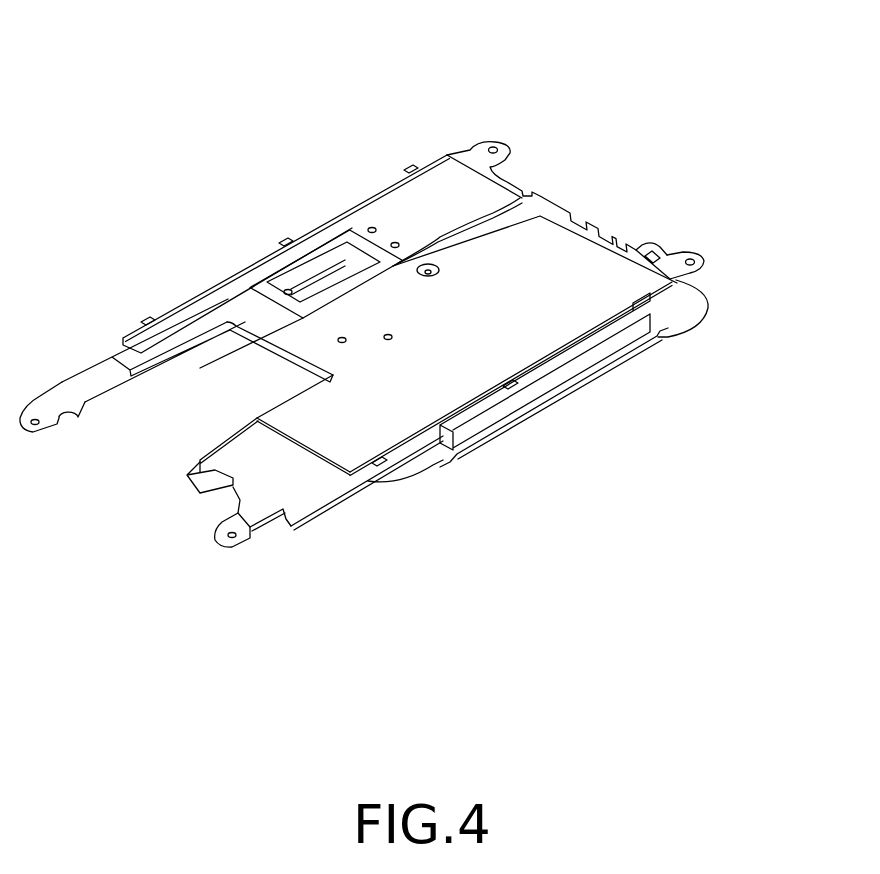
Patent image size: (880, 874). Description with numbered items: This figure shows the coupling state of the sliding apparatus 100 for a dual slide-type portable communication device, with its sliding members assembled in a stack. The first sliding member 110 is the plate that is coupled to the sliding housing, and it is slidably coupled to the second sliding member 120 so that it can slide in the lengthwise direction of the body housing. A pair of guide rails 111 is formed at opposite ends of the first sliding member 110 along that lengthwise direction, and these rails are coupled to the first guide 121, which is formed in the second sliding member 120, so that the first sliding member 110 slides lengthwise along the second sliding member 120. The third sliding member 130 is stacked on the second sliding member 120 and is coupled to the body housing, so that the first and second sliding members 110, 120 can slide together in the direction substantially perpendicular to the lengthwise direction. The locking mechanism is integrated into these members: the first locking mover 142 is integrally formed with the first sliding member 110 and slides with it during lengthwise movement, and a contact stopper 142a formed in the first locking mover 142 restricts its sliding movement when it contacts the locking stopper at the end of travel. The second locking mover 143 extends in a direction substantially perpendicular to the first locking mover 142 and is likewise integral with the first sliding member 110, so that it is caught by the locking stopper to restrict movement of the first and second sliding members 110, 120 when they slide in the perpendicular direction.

The sliding apparatus 100 is at (618, 77).
The first sliding member 110 is at (253, 515).
The guide rails 111 is at (343, 495).
The second sliding member 120 is at (478, 435).
The first guide 121 is at (582, 360).
The third sliding member 130 is at (676, 310).
The first locking mover 142 is at (200, 452).
The contact stopper 142a is at (200, 487).
The second locking mover 143 is at (255, 346).